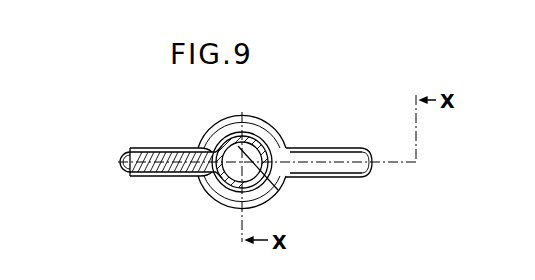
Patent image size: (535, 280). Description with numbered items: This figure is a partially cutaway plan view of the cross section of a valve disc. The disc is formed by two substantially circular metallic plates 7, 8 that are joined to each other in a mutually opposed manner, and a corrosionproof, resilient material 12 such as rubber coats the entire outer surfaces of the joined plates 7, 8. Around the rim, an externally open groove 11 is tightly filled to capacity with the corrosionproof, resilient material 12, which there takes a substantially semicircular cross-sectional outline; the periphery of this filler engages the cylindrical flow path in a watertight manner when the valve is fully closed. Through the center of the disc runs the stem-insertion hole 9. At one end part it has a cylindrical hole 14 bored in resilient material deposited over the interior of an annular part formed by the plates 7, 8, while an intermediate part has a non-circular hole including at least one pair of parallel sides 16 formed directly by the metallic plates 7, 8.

The substantially circular metallic plate 7 is at (162, 156).
The substantially circular metallic plate 8 is at (178, 158).
The stem-insertion hole 9 is at (234, 156).
The externally open groove 11 is at (126, 165).
The corrosionproof, resilient material 12 is at (212, 177).
The cylindrical hole 14 is at (281, 143).
The parallel sides 16 is at (272, 184).